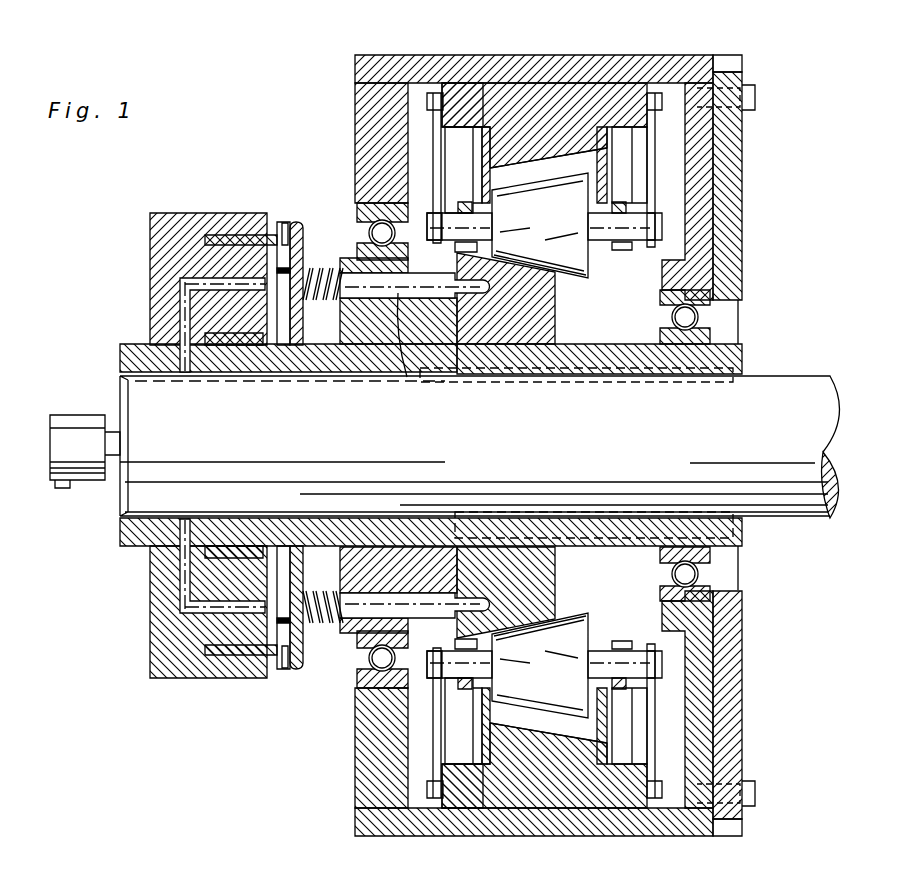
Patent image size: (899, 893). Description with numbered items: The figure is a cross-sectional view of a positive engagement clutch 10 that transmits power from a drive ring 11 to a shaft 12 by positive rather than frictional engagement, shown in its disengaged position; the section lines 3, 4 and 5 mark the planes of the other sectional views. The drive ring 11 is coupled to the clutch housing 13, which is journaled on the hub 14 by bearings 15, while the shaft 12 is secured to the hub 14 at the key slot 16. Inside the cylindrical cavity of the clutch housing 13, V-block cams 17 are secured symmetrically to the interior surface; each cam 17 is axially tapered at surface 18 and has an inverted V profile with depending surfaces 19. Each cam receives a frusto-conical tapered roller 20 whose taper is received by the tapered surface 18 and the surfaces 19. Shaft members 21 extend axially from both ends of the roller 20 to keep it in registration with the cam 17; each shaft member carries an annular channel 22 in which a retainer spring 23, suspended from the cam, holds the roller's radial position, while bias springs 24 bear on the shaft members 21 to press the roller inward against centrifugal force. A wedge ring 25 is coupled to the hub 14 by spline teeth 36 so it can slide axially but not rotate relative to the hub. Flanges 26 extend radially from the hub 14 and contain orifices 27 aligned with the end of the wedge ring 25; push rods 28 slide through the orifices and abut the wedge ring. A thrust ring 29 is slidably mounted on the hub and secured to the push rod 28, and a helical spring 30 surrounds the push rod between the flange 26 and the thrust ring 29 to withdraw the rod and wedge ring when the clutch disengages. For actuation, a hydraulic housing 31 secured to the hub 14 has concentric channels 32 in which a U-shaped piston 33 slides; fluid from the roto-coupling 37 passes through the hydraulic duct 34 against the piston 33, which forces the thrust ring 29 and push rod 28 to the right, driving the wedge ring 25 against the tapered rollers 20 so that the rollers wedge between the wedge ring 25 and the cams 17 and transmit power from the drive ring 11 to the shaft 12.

The positive engagement clutch 10 is at (272, 200).
The drive ring 11 is at (740, 122).
The shaft 12 is at (830, 412).
The clutch housing 13 is at (365, 57).
The hub 14 is at (128, 355).
The bearings 15 is at (370, 230).
The key slot 16 is at (740, 362).
The V-block cam 17 is at (453, 90).
The axially tapered surface 18 is at (508, 160).
The depending surfaces 19 is at (562, 167).
The tapered roller 20 is at (522, 225).
The shaft member 21 is at (450, 235).
The annular channel 22 is at (433, 677).
The retainer spring 23 is at (433, 125).
The bias spring 24 is at (465, 157).
The wedge ring 25 is at (545, 298).
The flange 26 is at (360, 340).
The orifice 27 is at (407, 377).
The push rod 28 is at (360, 277).
The thrust ring 29 is at (298, 220).
The helical spring 30 is at (322, 302).
The hydraulic housing 31 is at (163, 220).
The concentric channel 32 is at (233, 235).
The piston 33 is at (220, 657).
The hydraulic duct 34 is at (180, 295).
The spline teeth 36 is at (540, 350).
The roto-coupling 37 is at (65, 452).
The section line 3- 3 is at (670, 460).
The section line 4- 4 is at (596, 458).
The section line 5- 5 is at (541, 458).